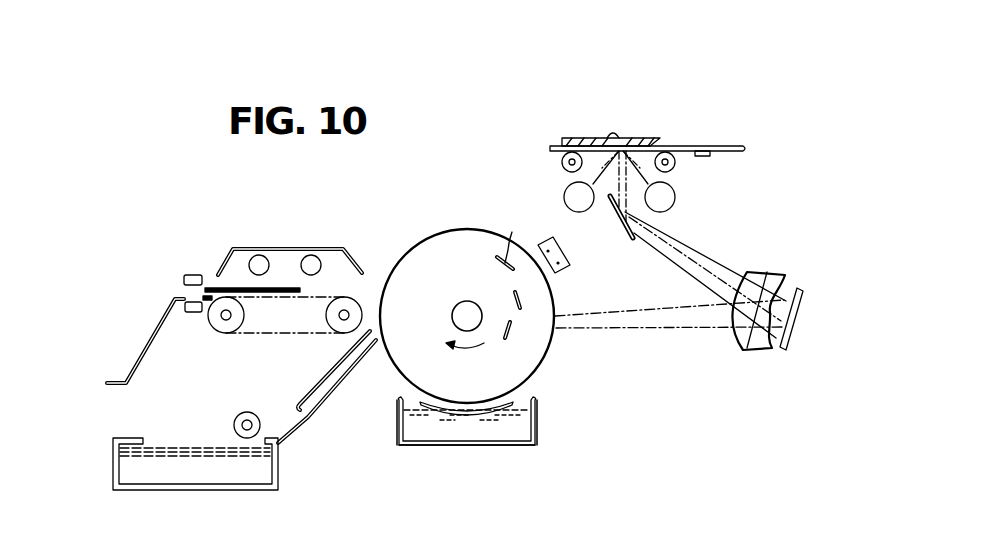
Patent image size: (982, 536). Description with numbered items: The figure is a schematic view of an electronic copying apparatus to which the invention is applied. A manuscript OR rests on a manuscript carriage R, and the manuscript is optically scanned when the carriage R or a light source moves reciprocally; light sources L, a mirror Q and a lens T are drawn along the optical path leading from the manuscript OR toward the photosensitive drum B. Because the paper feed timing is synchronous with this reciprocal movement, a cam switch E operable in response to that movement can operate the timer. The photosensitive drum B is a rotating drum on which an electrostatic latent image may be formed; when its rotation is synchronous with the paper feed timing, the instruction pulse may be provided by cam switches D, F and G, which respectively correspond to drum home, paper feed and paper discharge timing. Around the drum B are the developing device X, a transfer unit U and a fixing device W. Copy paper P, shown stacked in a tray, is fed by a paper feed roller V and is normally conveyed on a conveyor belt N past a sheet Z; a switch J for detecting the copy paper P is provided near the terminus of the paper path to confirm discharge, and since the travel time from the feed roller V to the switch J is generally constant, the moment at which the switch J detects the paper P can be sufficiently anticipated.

The photosensitive drum B is at (408, 262).
The cam switch G is at (511, 239).
The cam switch F is at (515, 300).
The cam switch D is at (509, 332).
The transfer unit U is at (568, 249).
The developing device X is at (453, 435).
The conveyor belt N is at (243, 333).
The fixing device W is at (311, 255).
The copy sheet Z is at (218, 287).
The copy paper P is at (217, 287).
The switch J is at (184, 280).
The paper feed roller V is at (232, 415).
The manuscript carriage R is at (717, 145).
The manuscript OR is at (638, 137).
The cam switch E is at (702, 157).
The lamps L is at (619, 181).
The mirror Q is at (618, 229).
The lens T is at (763, 268).